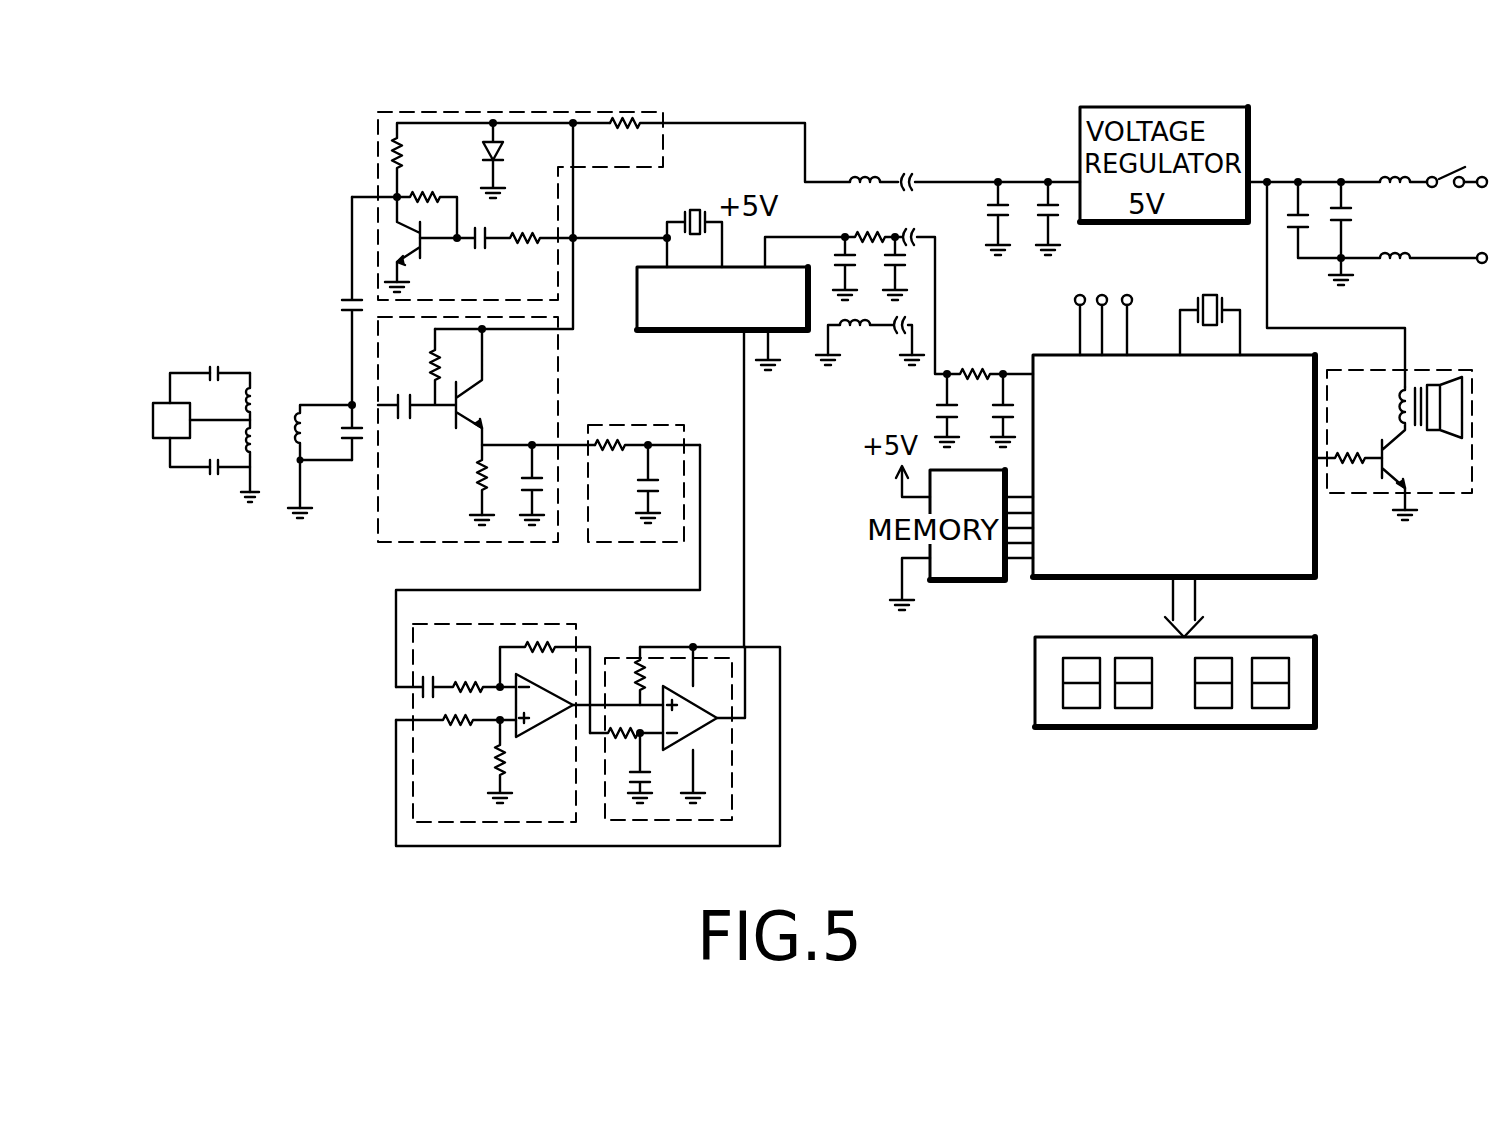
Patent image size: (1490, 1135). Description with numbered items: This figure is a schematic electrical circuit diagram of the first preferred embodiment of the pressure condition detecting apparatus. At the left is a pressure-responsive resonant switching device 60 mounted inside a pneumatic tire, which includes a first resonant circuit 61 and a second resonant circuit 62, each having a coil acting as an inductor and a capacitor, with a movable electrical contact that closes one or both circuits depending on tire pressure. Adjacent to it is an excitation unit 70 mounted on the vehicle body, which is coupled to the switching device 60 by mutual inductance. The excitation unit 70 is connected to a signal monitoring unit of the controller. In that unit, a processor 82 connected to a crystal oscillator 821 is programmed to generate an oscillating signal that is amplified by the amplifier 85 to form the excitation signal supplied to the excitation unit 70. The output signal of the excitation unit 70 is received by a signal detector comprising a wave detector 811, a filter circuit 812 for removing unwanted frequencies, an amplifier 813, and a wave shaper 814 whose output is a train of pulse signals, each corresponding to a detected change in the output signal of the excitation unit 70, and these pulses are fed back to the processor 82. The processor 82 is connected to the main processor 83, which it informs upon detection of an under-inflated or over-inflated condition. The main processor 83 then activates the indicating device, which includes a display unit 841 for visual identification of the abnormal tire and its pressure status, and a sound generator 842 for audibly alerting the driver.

The pressure-responsive resonant switching device 60 is at (182, 360).
The first resonant circuit 61 is at (245, 458).
The second resonant circuit 62 is at (242, 380).
The excitation unit 70 is at (299, 402).
The amplifier 85 is at (564, 112).
The processor 82 is at (634, 310).
The crystal oscillator 821 is at (696, 206).
The wave detector 811 is at (548, 354).
The filter circuit 812 is at (642, 430).
The amplifier 813 is at (413, 772).
The wave shaper 814 is at (728, 792).
The main processor 83 is at (1050, 342).
The display unit 841 is at (1035, 666).
The sound generator 842 is at (1443, 349).